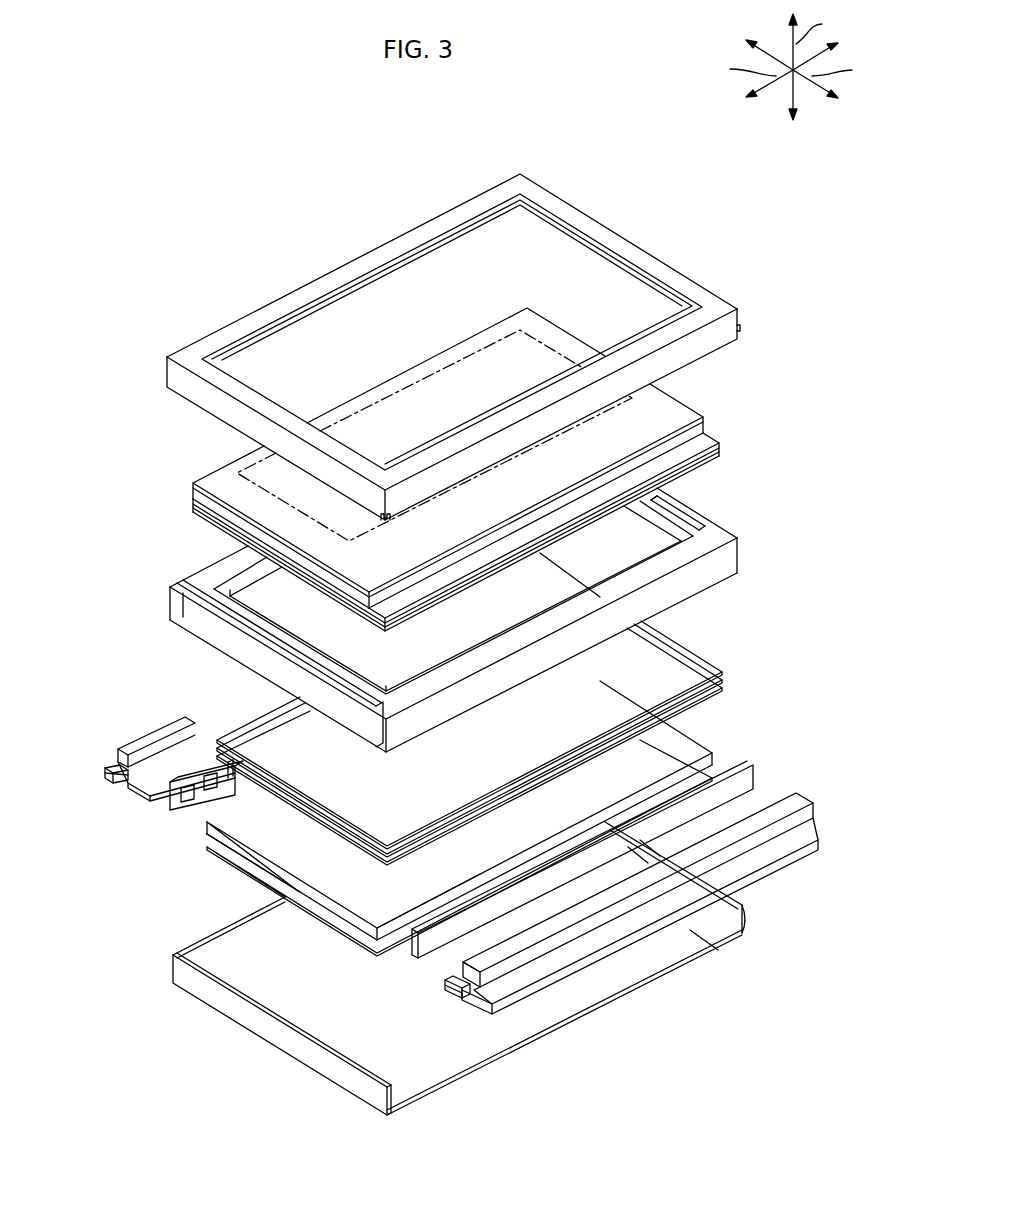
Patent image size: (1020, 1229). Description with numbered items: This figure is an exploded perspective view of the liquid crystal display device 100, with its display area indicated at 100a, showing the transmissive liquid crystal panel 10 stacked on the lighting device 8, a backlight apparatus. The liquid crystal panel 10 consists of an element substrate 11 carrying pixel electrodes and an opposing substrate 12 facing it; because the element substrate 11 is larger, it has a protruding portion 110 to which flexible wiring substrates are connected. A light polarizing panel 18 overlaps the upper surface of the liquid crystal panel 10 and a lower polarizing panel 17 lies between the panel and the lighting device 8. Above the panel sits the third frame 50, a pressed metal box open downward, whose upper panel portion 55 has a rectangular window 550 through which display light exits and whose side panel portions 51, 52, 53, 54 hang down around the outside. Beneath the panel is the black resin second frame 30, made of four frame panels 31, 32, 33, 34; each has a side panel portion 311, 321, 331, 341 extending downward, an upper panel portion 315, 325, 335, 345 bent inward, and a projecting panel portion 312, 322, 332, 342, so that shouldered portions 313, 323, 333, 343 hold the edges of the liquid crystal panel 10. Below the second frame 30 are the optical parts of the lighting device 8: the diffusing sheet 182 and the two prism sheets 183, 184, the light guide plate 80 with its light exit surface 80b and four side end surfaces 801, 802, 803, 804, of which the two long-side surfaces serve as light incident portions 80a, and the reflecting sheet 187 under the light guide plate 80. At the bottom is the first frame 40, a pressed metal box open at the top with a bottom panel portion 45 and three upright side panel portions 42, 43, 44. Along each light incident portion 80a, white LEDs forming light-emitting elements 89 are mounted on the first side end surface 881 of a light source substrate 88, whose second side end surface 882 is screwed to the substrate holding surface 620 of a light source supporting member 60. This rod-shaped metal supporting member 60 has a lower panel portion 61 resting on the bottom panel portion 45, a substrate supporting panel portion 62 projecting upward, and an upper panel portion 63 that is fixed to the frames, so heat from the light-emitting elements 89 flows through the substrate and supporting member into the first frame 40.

The liquid crystal display device 100 is at (372, 110).
The display area 100a is at (518, 325).
The third frame 50 is at (574, 181).
The side panel portion 51 is at (723, 340).
The side panel portion 52 is at (406, 258).
The side panel portion 53 is at (200, 397).
The side panel portion 54 is at (647, 277).
The upper panel portion 55 is at (667, 267).
The window 550 is at (610, 240).
The liquid crystal panel 10 is at (135, 518).
The element substrate 11 is at (213, 513).
The opposing substrate 12 is at (236, 552).
The lower polarizing panel 17 is at (722, 465).
The light polarizing panel 18 is at (668, 403).
The protruding portion 110 is at (706, 437).
The second frame 30 is at (745, 519).
The frame panel 31 is at (699, 585).
The side panel portion 311 is at (517, 670).
The projecting panel portion 312 is at (477, 657).
The shouldered portion 313 is at (547, 627).
The upper panel portion 315 is at (577, 620).
The frame panel 32 is at (238, 588).
The side panel portion 321 is at (240, 603).
The projecting panel portion 322 is at (198, 628).
The shouldered portion 323 is at (204, 595).
The upper panel portion 325 is at (253, 560).
The frame panel 33 is at (354, 720).
The side panel portion 331 is at (353, 720).
The projecting panel portion 332 is at (392, 672).
The shouldered portion 333 is at (333, 673).
The upper panel portion 335 is at (304, 692).
The frame panel 34 is at (671, 532).
The side panel portion 341 is at (690, 548).
The projecting panel portion 342 is at (650, 510).
The shouldered portion 343 is at (712, 500).
The upper panel portion 345 is at (704, 521).
The lighting device 8 is at (832, 514).
The light guide plate 80 is at (706, 723).
The light incident portion 80a is at (117, 936).
The light exit surface 80b is at (704, 658).
The side end surface 801 is at (393, 923).
The side end surface 802 is at (383, 787).
The side end surface 803 is at (228, 847).
The side end surface 804 is at (707, 743).
The diffusing sheet 182 is at (397, 862).
The prism sheet 183 is at (433, 843).
The prism sheet 184 is at (467, 833).
The reflecting sheet 187 is at (250, 870).
The first frame 40 is at (704, 974).
The side panel portion 42 is at (208, 945).
The side panel portion 43 is at (205, 990).
The side panel portion 44 is at (735, 913).
The bottom panel portion 45 is at (285, 1002).
The light source supporting member 60 is at (90, 778).
The lower panel portion 61 is at (142, 803).
The substrate supporting panel portion 62 is at (107, 769).
The substrate holding surface 620 is at (117, 787).
The upper panel portion 63 is at (120, 753).
The light source substrate 88 is at (177, 780).
The first side end surface 881 is at (140, 748).
The second side end surface 882 is at (180, 760).
The light-emitting element 89 is at (220, 773).